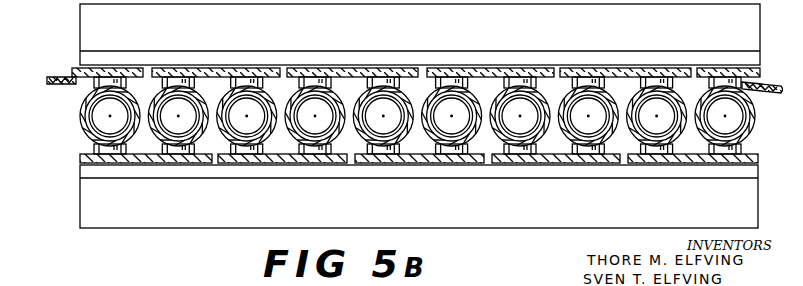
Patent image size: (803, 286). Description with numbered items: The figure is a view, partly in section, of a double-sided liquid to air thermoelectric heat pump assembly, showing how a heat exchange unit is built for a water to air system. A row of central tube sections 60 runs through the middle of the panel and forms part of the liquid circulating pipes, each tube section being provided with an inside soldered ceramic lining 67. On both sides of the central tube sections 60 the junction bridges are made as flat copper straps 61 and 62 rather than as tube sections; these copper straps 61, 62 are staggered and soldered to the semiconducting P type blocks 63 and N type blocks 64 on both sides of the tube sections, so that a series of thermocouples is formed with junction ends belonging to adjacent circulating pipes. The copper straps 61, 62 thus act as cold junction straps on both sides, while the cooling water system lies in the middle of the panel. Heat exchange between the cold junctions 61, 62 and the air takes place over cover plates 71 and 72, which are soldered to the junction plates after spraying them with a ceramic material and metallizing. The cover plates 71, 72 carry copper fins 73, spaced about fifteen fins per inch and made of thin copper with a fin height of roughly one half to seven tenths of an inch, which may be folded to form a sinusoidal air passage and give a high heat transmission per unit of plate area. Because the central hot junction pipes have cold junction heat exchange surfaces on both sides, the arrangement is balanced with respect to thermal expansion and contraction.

The central tube section 60 is at (406, 109).
The copper strap 61 is at (188, 157).
The copper strap 62 is at (318, 75).
The semiconducting P type block 63 is at (245, 151).
The semiconducting N type block 64 is at (247, 86).
The ceramic lining 67 is at (503, 97).
The cover plate 71 is at (150, 173).
The cover plate 72 is at (192, 63).
The copper fins 73 is at (266, 45).